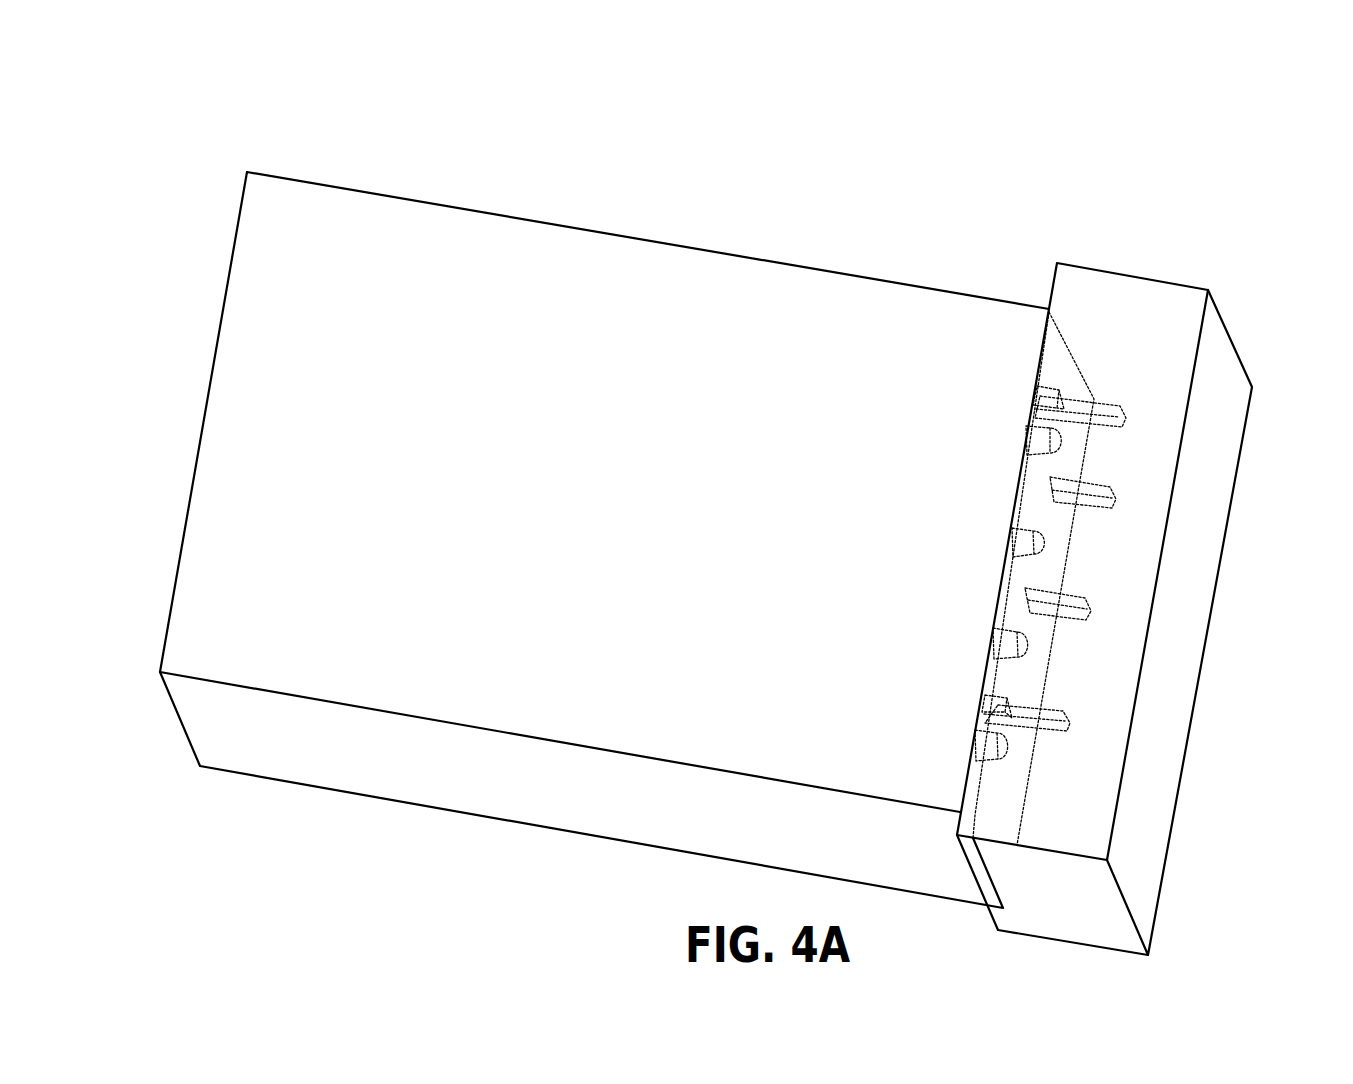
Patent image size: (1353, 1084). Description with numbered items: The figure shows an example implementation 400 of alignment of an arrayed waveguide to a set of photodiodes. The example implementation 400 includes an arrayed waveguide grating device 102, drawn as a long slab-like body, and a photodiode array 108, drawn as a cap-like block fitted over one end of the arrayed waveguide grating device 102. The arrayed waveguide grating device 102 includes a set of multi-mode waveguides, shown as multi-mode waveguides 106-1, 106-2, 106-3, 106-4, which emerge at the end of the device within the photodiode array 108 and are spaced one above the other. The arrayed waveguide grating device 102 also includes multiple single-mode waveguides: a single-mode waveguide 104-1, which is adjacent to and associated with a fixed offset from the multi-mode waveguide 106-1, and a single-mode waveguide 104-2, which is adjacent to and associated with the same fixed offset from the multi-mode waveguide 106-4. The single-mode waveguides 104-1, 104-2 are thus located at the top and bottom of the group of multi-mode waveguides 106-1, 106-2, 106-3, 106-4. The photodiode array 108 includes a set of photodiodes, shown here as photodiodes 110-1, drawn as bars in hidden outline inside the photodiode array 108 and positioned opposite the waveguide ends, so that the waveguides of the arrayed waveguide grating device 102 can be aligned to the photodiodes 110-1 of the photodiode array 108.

The example implementation 400 is at (248, 62).
The arrayed waveguide grating device 102 is at (316, 220).
The photodiode array 108 is at (1198, 325).
The single-mode waveguide 104-1 is at (1036, 394).
The single-mode waveguide 104-2 is at (982, 702).
The multi-mode waveguide 106-1 is at (1028, 437).
The multi-mode waveguide 106-2 is at (1008, 539).
The multi-mode waveguide 106-3 is at (990, 640).
The multi-mode waveguide 106-4 is at (973, 750).
The photodiode 110-1 is at (1216, 436).